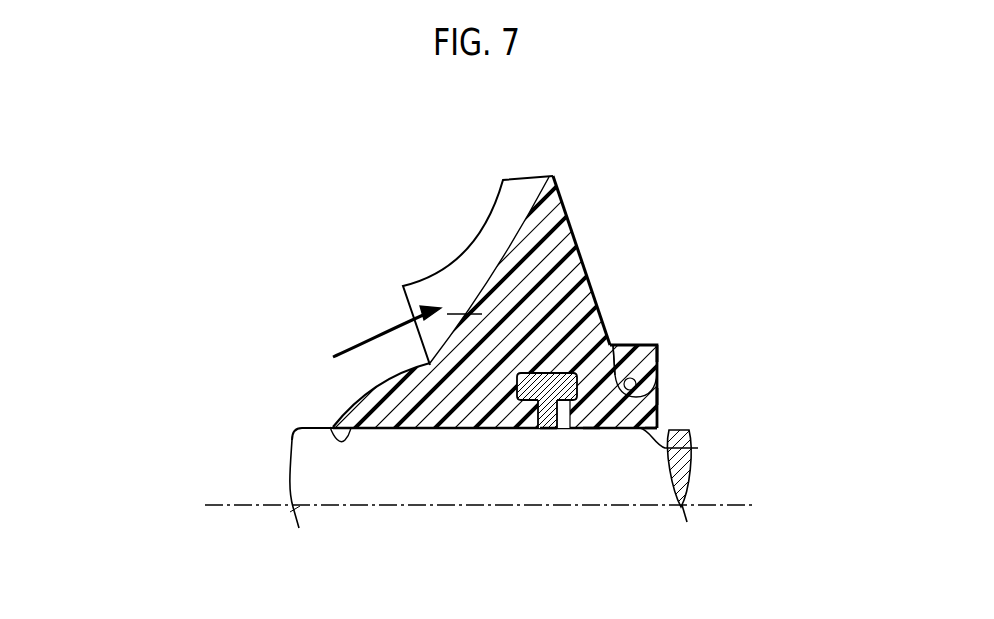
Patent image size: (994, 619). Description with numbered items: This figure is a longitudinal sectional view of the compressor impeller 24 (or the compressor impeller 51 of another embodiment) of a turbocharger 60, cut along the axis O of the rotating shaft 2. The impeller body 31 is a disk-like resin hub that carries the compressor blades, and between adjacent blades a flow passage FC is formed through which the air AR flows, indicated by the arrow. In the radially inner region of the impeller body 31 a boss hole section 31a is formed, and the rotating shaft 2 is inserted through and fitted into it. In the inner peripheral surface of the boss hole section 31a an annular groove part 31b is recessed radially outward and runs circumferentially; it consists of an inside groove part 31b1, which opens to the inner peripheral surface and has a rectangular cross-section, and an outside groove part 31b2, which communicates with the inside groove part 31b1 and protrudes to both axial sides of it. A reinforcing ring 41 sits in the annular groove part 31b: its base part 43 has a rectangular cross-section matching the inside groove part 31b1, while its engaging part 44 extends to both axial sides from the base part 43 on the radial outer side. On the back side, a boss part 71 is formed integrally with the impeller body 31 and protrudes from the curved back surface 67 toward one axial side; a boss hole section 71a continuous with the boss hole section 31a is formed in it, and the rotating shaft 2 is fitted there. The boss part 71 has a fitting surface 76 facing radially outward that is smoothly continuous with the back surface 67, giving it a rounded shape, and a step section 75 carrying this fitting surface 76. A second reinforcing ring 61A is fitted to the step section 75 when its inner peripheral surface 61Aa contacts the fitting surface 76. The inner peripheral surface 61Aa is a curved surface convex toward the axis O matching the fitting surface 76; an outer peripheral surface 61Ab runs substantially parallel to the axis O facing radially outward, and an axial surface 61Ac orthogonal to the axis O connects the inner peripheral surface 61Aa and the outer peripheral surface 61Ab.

The rotating shaft 2 is at (295, 460).
The axis O is at (213, 505).
The impeller body 31 is at (528, 300).
The boss hole section 31a is at (330, 427).
The annular groove part 31b is at (673, 557).
The inside groove part 31b1 is at (552, 423).
The outside groove part 31b2 is at (590, 430).
The reinforcing ring 41 is at (530, 557).
The base part 43 is at (542, 423).
The engaging part 44 is at (517, 385).
The compressor impeller 51 is at (723, 324).
The compressor impeller 24 is at (690, 257).
The turbocharger 60 is at (740, 175).
The second reinforcing ring 61A is at (608, 345).
The inner peripheral surface 61Aa is at (658, 398).
The outer peripheral surface 61Ab is at (620, 365).
The axial surface 61Ac is at (658, 352).
The back surface 67 is at (567, 222).
The boss part 71 is at (655, 414).
The boss hole section 71a is at (693, 447).
The step section 75 is at (640, 348).
The fitting surface 76 is at (640, 383).
The air AR is at (353, 353).
The flow passage FC is at (464, 300).